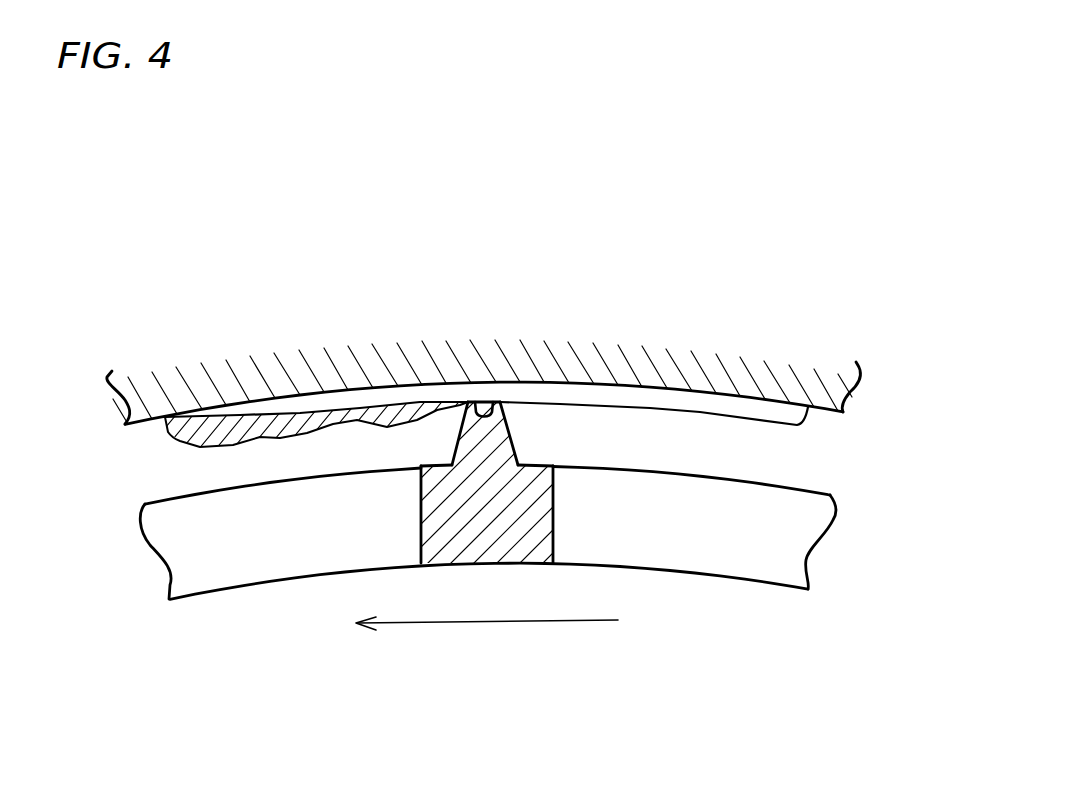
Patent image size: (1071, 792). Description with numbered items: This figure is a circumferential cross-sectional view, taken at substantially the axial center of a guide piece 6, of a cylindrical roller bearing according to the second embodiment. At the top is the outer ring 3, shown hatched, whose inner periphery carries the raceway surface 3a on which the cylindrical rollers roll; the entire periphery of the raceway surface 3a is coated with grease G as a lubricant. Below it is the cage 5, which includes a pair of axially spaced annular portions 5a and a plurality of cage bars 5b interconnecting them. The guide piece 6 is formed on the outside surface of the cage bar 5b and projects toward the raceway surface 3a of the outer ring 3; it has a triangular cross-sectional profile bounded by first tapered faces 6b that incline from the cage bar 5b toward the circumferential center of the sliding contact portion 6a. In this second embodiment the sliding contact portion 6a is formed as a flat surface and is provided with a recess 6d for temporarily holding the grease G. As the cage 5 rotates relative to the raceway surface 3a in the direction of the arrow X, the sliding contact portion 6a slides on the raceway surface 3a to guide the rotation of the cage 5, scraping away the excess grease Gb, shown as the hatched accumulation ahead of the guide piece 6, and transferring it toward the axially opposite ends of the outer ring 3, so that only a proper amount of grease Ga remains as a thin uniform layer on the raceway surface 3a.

The outer ring 3 is at (347, 378).
The raceway surface 3a is at (650, 409).
The cage 5 is at (298, 576).
The annular portion 5a is at (708, 555).
The cage bar 5b is at (553, 513).
The guide piece 6 is at (516, 422).
The sliding contact portion 6a is at (470, 396).
The first tapered face 6b is at (456, 448).
The recess 6d is at (485, 397).
The grease G is at (152, 437).
The proper amount of grease Ga is at (738, 407).
The excess grease Gb is at (185, 441).
The direction of rotation X is at (540, 624).